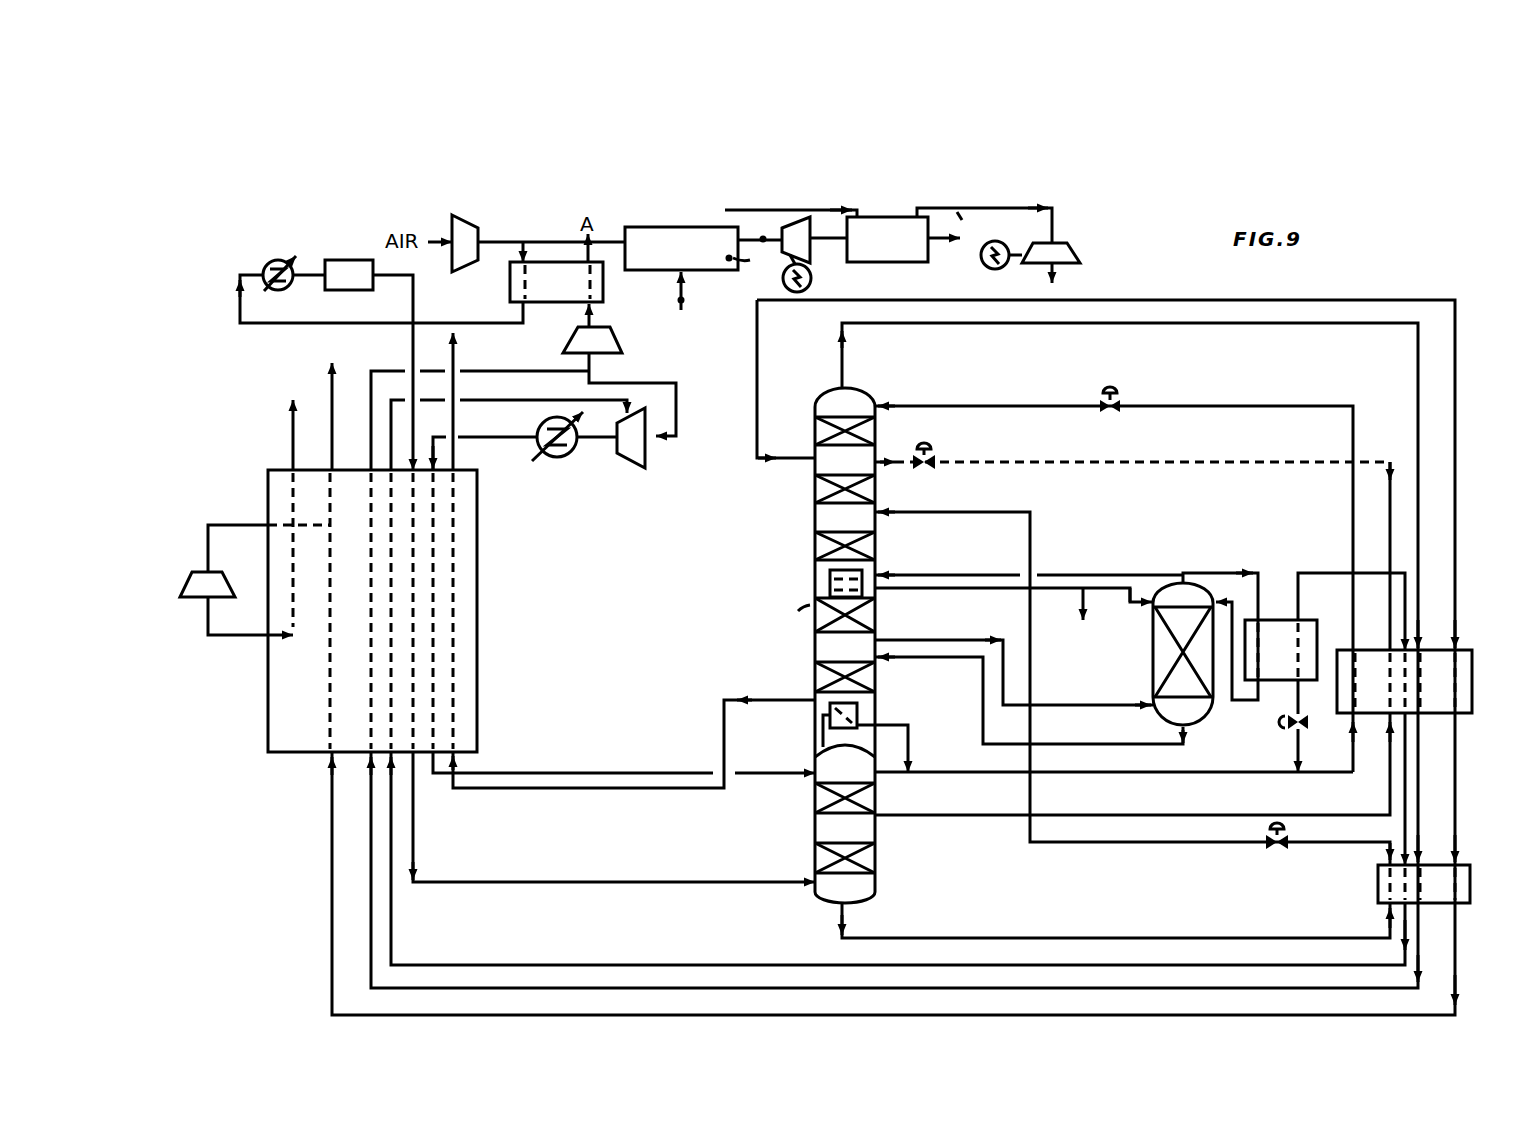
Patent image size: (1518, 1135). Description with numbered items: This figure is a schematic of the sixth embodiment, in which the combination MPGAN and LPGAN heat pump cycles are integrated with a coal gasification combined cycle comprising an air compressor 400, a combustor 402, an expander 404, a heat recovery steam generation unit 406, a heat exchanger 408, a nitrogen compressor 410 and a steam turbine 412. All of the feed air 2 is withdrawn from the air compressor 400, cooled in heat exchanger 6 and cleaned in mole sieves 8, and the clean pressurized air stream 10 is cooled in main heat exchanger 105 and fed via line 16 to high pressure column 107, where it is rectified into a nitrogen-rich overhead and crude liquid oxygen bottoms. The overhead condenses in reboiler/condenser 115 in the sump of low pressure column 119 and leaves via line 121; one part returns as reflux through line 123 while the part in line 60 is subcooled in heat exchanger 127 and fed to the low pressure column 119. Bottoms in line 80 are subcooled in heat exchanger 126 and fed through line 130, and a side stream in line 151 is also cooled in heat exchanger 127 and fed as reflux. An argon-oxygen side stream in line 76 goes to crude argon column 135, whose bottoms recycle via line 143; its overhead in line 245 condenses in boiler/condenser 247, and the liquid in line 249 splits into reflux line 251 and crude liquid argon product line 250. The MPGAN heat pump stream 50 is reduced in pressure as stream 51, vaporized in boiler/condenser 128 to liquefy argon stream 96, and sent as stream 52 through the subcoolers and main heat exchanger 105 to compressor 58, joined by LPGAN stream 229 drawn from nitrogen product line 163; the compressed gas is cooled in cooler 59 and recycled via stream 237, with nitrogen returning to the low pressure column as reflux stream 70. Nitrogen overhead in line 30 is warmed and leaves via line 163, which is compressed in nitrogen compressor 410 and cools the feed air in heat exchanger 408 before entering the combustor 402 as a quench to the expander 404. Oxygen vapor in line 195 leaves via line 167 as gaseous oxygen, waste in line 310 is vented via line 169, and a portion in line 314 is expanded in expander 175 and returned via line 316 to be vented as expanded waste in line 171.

The feed air stream 2 is at (346, 310).
The heat exchanger 6 is at (284, 259).
The mole sieves 8 is at (337, 260).
The clean pressurized air stream 10 is at (413, 292).
The line 16 is at (563, 882).
The line 30 is at (842, 370).
The stream 50 is at (1298, 748).
The stream 51 is at (1298, 705).
The stream 52 is at (1298, 573).
The compressor 58 is at (617, 456).
The cooler 59 is at (557, 458).
The line 60 is at (1103, 774).
The stream 70 is at (1015, 406).
The line 76 is at (940, 640).
The line 80 is at (1193, 937).
The stream 96 is at (1200, 573).
The main heat exchanger 105 is at (268, 712).
The high pressure column 107 is at (907, 824).
The reboiler/condenser 115 is at (857, 729).
The low pressure column 119 is at (806, 524).
The line 121 is at (906, 753).
The line 123 is at (885, 776).
The heat exchanger 126 is at (1375, 878).
The heat exchanger 127 is at (1370, 715).
The boiler/condenser 128 is at (1305, 620).
The line 130 is at (925, 512).
The crude argon column 135 is at (1152, 632).
The line 143 is at (1115, 732).
The line 151 is at (1205, 816).
The line 163 is at (368, 419).
The line 167 is at (458, 443).
The line 169 is at (332, 410).
The line 171 is at (293, 430).
The expander 175 is at (185, 572).
The line 195 is at (777, 705).
The stream 229 is at (676, 410).
The stream 237 is at (598, 773).
The line 245 is at (1147, 564).
The boiler/condenser 247 is at (862, 572).
The line 249 is at (897, 589).
The line 250 is at (1060, 611).
The line 251 is at (1128, 594).
The line 310 is at (757, 386).
The line 314 is at (240, 513).
The line 316 is at (228, 635).
The air compressor 400 is at (478, 233).
The combustor 402 is at (712, 270).
The expander 404 is at (815, 255).
The heat recovery steam generation unit 406 is at (905, 262).
The heat exchanger 408 is at (577, 290).
The nitrogen compressor 410 is at (621, 343).
The steam turbine 412 is at (1062, 243).